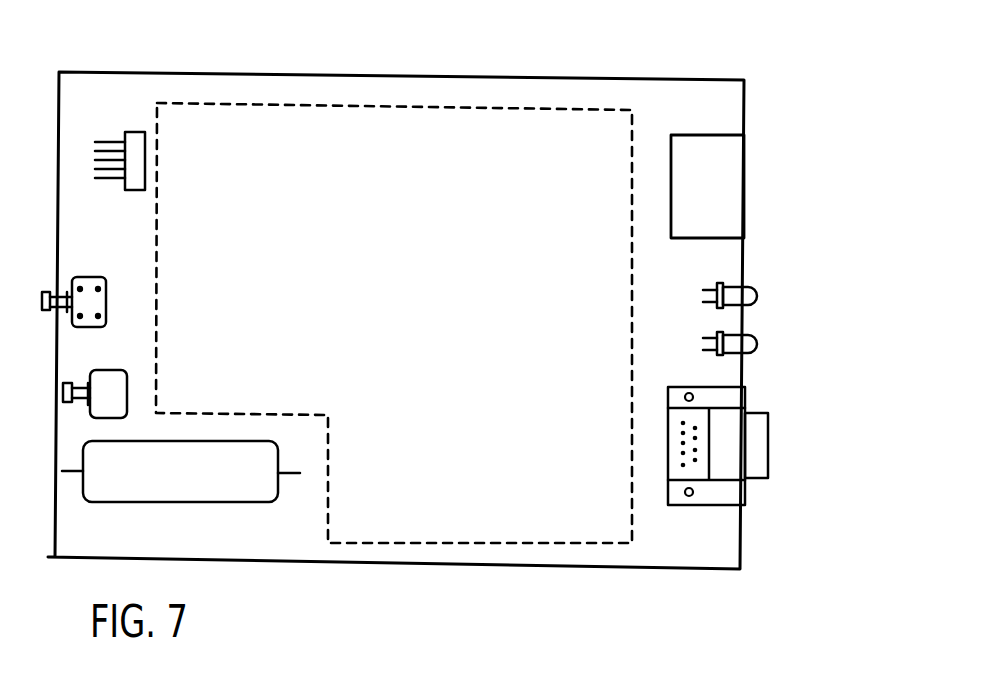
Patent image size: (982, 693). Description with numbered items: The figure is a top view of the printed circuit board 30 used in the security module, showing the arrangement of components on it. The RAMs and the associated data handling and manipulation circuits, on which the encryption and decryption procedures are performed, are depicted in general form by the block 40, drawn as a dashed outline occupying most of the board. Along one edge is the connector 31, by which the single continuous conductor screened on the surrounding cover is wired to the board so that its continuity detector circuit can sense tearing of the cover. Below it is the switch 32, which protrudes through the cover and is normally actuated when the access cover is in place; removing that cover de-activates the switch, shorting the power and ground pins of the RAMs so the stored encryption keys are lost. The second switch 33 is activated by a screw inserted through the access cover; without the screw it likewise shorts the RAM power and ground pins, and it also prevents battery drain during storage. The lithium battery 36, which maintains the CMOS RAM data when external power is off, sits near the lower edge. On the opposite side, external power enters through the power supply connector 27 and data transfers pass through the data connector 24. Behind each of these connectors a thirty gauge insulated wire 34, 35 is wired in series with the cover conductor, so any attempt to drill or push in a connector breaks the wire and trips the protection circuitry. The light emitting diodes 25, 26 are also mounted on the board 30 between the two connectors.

The data connector 24 is at (765, 480).
The light emitting diode 25 is at (738, 335).
The light emitting diode 26 is at (742, 287).
The power supply connector 27 is at (730, 172).
The printed circuit board 30 is at (367, 95).
The connector 31 is at (130, 190).
The switch 32 is at (92, 282).
The second switch 33 is at (100, 372).
The 30 gauge insulated wire 34 is at (706, 133).
The 30 gauge insulated wire 35 is at (695, 511).
The lithium battery 36 is at (83, 498).
The block 40 is at (328, 520).